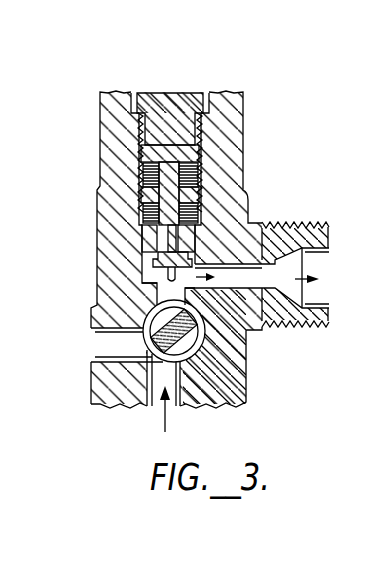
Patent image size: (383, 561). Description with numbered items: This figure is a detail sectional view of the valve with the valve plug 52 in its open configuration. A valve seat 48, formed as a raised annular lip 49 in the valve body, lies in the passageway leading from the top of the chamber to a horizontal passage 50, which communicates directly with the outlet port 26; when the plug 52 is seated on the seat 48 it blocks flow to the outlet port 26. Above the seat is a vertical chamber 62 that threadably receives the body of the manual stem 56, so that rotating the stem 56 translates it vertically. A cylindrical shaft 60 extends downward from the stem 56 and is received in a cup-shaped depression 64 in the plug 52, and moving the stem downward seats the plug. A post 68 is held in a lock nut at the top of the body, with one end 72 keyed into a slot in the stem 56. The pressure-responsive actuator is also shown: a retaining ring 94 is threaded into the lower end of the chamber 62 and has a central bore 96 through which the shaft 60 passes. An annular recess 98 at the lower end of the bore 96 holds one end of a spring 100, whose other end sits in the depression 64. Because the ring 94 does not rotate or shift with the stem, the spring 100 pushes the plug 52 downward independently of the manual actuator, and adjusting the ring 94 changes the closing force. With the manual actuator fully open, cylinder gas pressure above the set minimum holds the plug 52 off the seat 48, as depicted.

The outlet port 26 is at (313, 268).
The valve seat 48 is at (150, 276).
The raised annular lip 49 is at (155, 300).
The horizontal passage 50 is at (253, 292).
The valve plug 52 is at (203, 222).
The stem 56 is at (203, 158).
The cylindrical shaft 60 is at (203, 178).
The vertical chamber 62 is at (141, 167).
The cup-shaped depression 64 is at (143, 228).
The post 68 is at (175, 110).
The end of the post 72 is at (143, 125).
The retaining ring 94 is at (159, 193).
The central bore 96 is at (142, 186).
The annular recess 98 is at (143, 208).
The spring 100 is at (153, 247).